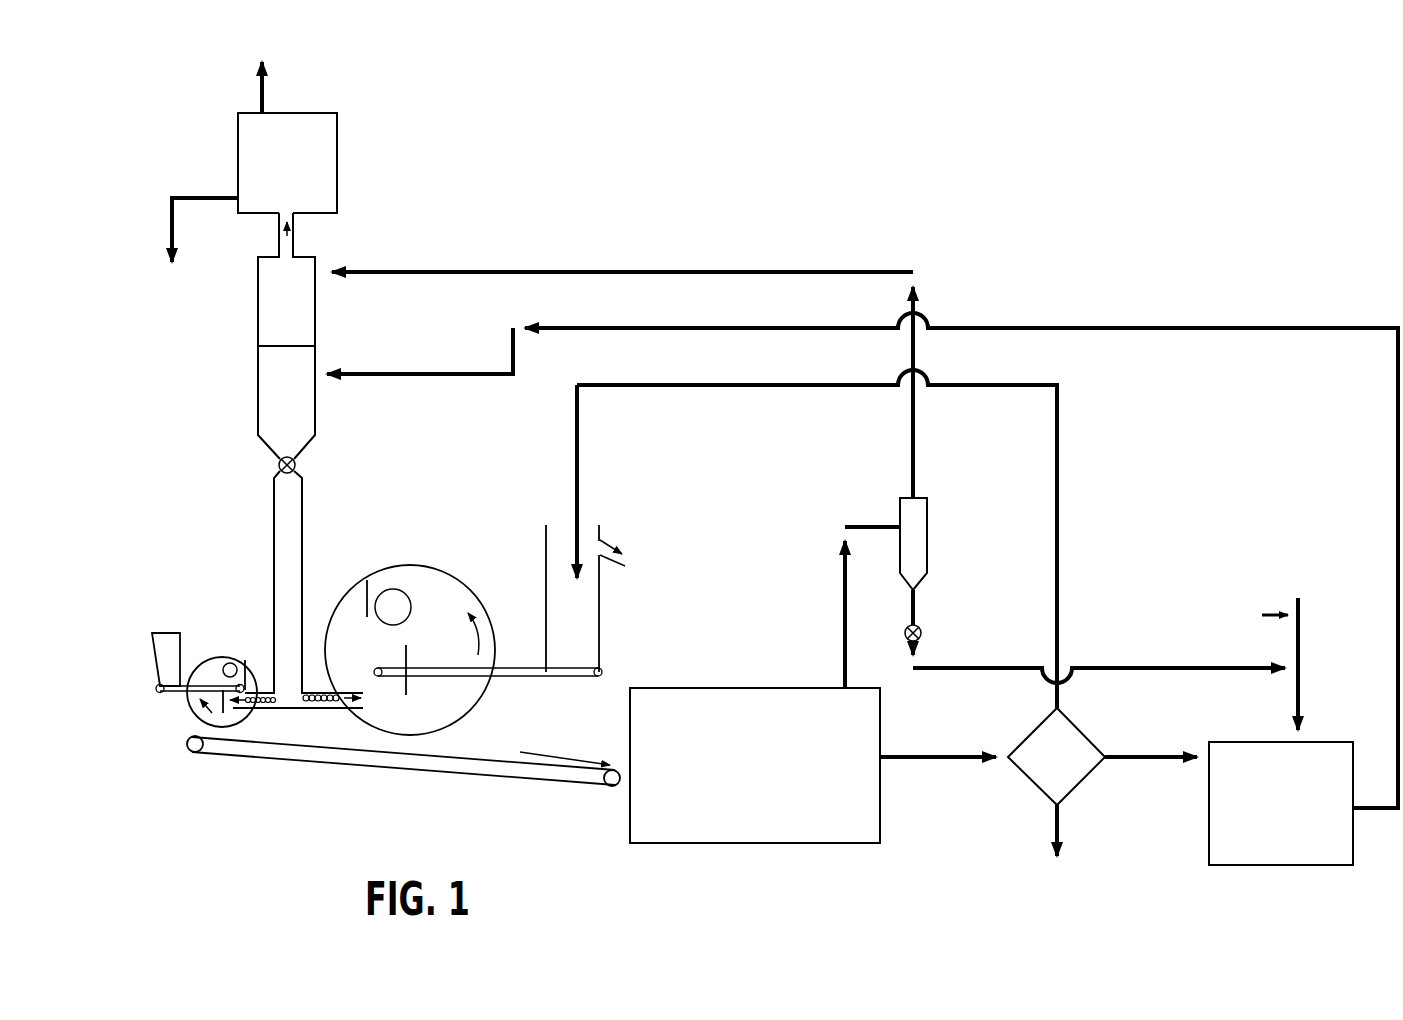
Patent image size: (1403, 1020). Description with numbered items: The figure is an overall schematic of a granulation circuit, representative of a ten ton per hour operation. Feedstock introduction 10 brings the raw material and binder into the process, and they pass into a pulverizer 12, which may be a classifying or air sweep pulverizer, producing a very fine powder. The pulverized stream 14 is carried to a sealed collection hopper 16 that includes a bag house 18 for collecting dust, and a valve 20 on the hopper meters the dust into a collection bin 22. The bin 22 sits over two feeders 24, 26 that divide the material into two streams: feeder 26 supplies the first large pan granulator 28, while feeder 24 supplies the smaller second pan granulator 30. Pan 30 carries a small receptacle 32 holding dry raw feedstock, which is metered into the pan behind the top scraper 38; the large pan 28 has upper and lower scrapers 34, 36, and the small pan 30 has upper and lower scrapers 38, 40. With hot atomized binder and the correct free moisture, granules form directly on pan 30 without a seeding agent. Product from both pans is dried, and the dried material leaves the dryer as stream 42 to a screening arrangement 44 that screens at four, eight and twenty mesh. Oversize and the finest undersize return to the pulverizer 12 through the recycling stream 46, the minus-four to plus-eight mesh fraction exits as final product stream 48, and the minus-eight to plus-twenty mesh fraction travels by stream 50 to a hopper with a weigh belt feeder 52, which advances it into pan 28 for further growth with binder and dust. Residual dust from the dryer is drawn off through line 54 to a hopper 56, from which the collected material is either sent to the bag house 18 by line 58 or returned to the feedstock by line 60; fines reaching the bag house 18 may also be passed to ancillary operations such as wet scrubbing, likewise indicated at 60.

The feedstock introduction 10 is at (1285, 578).
The pulverizer 12 is at (1235, 823).
The pulverized stream 14 is at (1386, 818).
The collection hopper 16 is at (262, 395).
The bag house 18 is at (262, 303).
The valve 20 is at (279, 465).
The collection bin 22 is at (274, 533).
The feeder 24 is at (268, 712).
The feeder 26 is at (322, 712).
The first large pan granulator 28 is at (442, 592).
The second pan granulator 30 is at (192, 720).
The receptacle 32 is at (160, 640).
The upper scraper 34 is at (367, 604).
The lower scraper 36 is at (408, 690).
The top scraper 38 is at (245, 718).
The lower scraper 40 is at (255, 676).
The dryer exit stream 42 is at (926, 760).
The screening arrangement 44 is at (1040, 780).
The recycling stream 46 is at (1150, 758).
The final product stream 48 is at (1060, 828).
The stream 50 is at (1057, 520).
The weigh belt feeder 52 is at (636, 618).
The line 54 is at (845, 604).
The hopper 56 is at (927, 546).
The line 58 is at (912, 438).
The line 60 is at (1135, 668).